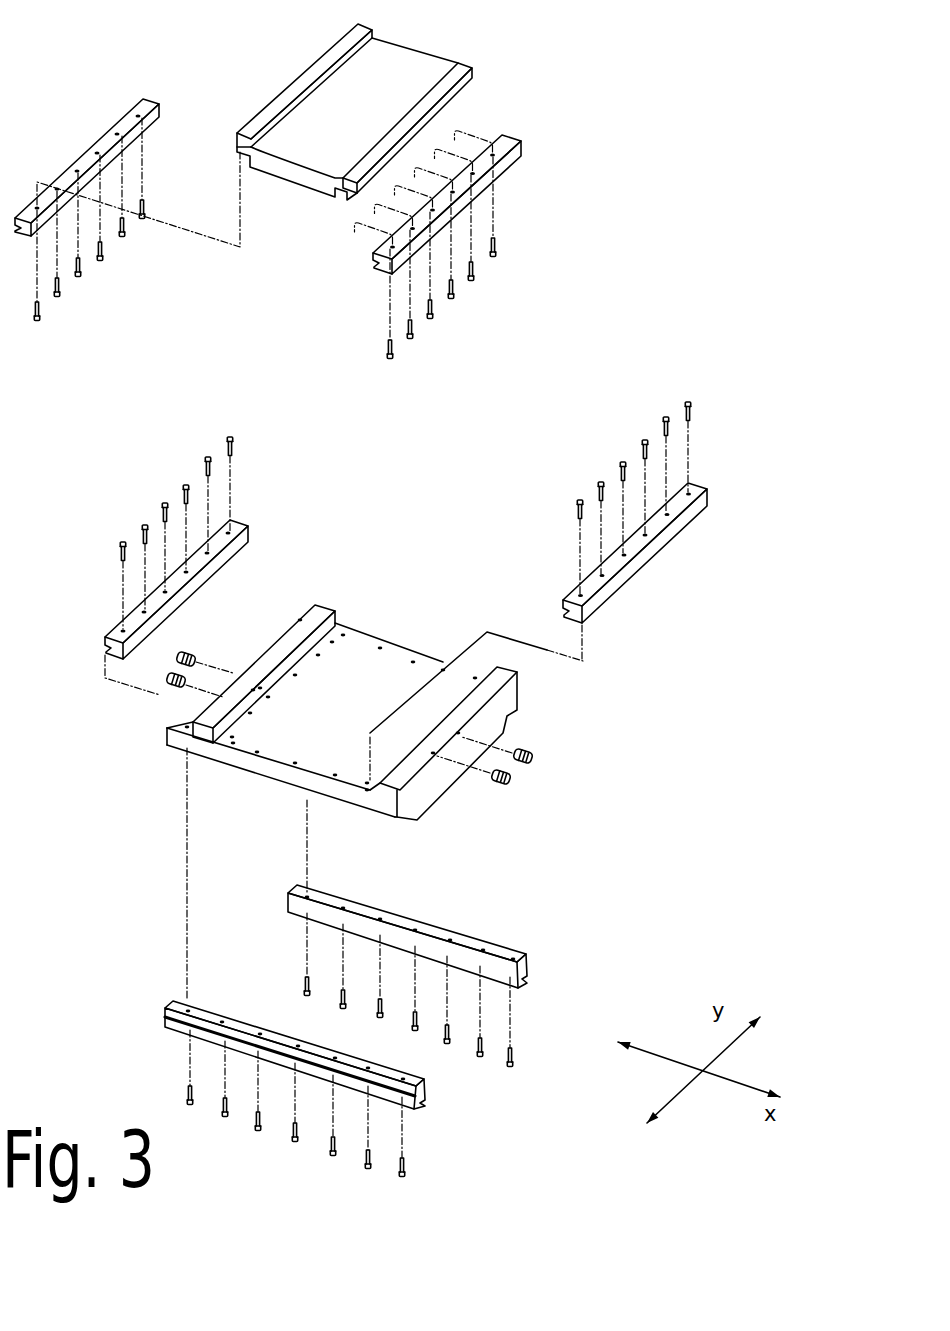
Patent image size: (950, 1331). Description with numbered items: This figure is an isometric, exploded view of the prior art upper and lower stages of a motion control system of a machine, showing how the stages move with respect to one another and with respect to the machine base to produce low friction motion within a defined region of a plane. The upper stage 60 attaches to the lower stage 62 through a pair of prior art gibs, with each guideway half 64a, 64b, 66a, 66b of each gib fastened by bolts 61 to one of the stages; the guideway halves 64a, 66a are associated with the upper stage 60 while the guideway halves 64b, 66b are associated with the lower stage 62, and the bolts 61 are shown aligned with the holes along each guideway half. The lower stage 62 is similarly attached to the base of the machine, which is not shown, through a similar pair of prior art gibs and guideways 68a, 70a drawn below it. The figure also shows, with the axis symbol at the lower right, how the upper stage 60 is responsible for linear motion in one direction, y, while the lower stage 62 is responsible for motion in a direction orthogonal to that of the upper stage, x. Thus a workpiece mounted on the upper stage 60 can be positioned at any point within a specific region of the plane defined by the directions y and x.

The upper stage 60 is at (497, 53).
The bolts 61 is at (500, 243).
The lower stage 62 is at (548, 703).
The guideway half 64a is at (128, 110).
The guideway half 64b is at (244, 520).
The guideway half 66a is at (517, 157).
The guideway half 66b is at (668, 535).
The guideway 68a is at (173, 1000).
The guideway 70a is at (517, 962).